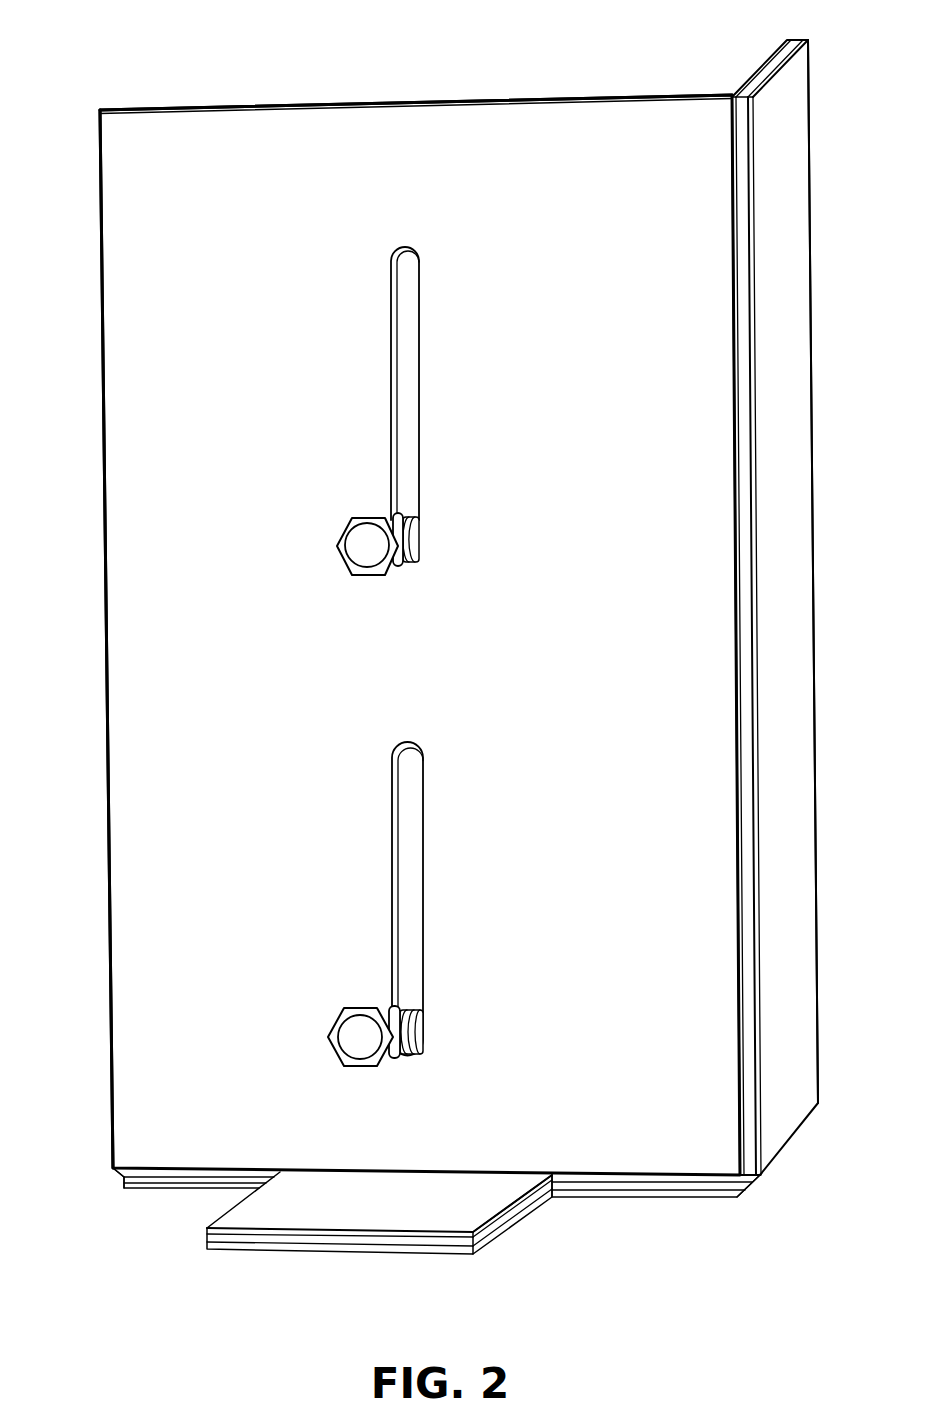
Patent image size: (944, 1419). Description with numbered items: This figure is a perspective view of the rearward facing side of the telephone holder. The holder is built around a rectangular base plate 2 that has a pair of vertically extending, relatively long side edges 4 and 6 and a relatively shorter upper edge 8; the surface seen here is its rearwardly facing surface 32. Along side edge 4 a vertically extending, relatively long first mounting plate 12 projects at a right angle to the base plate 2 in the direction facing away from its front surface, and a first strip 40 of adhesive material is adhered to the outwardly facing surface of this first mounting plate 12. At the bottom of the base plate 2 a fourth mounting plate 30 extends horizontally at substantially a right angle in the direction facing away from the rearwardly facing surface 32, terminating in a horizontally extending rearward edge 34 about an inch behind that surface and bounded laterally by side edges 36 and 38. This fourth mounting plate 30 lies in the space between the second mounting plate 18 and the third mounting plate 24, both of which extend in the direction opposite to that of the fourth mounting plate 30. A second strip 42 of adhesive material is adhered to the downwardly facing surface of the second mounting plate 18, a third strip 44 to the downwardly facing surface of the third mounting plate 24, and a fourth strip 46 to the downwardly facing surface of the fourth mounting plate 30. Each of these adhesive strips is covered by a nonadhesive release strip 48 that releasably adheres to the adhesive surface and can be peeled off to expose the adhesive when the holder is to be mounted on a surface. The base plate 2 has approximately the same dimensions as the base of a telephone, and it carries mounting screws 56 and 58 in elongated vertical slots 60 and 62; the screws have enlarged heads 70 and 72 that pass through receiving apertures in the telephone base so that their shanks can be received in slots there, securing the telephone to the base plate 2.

The base plate 2 is at (462, 140).
The side edge 4 is at (733, 441).
The side edge 6 is at (103, 352).
The upper edge 8 is at (335, 108).
The first mounting plate 12 is at (760, 86).
The second mounting plate 18 is at (703, 1180).
The third mounting plate 24 is at (205, 1172).
The fourth mounting plate 30 is at (305, 1210).
The rearwardly facing surface 32 is at (150, 756).
The rearward edge 34 is at (368, 1240).
The side edge 36 is at (513, 1197).
The side edge 38 is at (243, 1198).
The first strip of adhesive material 40 is at (742, 305).
The second strip of adhesive material 42 is at (722, 1188).
The third strip of adhesive material 44 is at (145, 1180).
The fourth strip of adhesive material 46 is at (493, 1233).
The nonadhesive release strip 48 is at (787, 209).
The mounting screw 56 is at (418, 535).
The mounting screw 58 is at (418, 1008).
The elongated vertical slot 60 is at (410, 275).
The elongated vertical slot 62 is at (405, 758).
The enlarged head 70 is at (340, 533).
The enlarged head 72 is at (338, 1027).